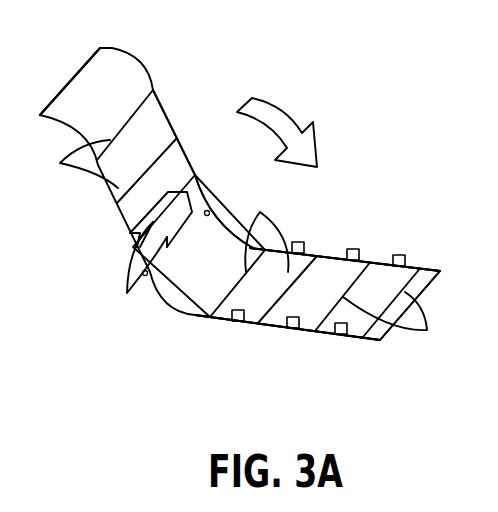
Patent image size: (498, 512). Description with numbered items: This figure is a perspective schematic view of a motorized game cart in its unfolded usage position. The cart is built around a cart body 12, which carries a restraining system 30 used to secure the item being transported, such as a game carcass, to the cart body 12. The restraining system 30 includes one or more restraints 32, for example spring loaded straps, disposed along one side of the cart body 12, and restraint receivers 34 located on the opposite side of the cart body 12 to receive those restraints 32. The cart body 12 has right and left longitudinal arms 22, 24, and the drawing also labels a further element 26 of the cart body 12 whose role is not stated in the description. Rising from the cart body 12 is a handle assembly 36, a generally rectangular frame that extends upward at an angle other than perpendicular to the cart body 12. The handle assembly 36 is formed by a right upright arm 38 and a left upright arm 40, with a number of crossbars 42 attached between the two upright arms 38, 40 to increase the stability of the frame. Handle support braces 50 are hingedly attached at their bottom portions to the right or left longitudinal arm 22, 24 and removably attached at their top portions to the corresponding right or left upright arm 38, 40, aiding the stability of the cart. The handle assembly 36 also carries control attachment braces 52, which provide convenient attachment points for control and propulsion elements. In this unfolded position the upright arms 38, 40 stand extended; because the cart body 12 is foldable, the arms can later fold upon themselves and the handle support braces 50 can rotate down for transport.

The cart body 12 is at (198, 350).
The right longitudinal arm 22 is at (372, 342).
The left longitudinal arm 24 is at (377, 258).
The curved edge portion 26 is at (349, 267).
The restraining system 30 is at (302, 344).
The restraints 32 is at (350, 243).
The restraint receivers 34 is at (288, 329).
The handle assembly 36 is at (77, 225).
The right upright arm 38 is at (125, 220).
The left upright arm 40 is at (170, 117).
The crossbars 42 is at (63, 87).
The handle support braces 50 is at (233, 208).
The control attachment braces 52 is at (140, 271).